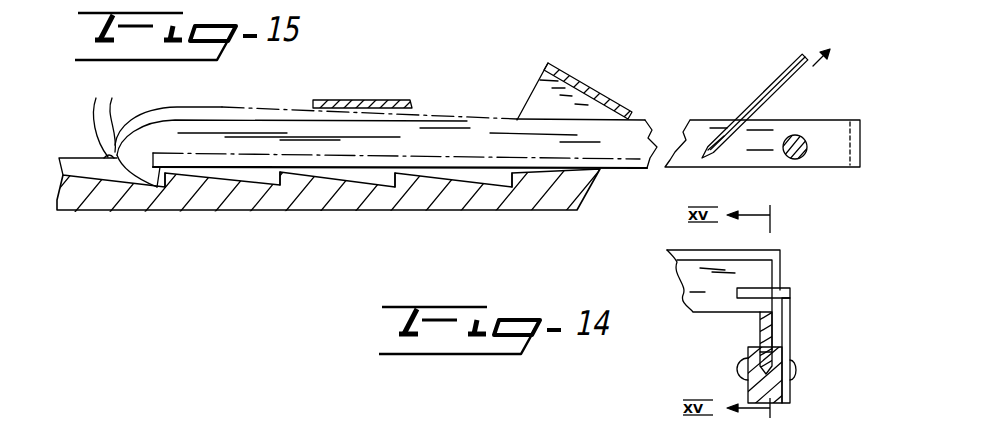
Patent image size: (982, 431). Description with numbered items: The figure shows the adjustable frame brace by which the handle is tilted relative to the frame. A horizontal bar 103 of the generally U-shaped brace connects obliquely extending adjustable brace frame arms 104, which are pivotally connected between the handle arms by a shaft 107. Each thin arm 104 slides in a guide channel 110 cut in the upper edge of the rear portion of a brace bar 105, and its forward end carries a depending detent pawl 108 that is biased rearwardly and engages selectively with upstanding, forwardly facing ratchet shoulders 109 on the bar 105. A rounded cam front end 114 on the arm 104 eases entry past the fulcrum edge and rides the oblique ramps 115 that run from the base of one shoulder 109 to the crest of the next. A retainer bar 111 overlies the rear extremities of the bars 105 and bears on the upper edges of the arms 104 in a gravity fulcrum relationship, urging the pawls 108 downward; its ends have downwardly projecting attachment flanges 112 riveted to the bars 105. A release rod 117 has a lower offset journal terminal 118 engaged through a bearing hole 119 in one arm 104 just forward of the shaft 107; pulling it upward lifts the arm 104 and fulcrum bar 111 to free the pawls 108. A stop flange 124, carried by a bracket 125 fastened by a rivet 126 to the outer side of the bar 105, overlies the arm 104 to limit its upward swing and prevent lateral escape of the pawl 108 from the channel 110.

In FIG. 15, the horizontal bar 103 is at (861, 147).
In FIG. 15, the adjustable brace frame arm 104 is at (632, 130).
In FIG. 14, the adjustable brace frame arm 104 is at (758, 326).
In FIG. 15, the brace bar 105 is at (293, 212).
In FIG. 14, the brace bar 105 is at (748, 395).
In FIG. 15, the shaft 107 is at (808, 140).
In FIG. 15, the detent pawl 108 is at (147, 176).
In FIG. 14, the detent pawl 108 is at (762, 372).
In FIG. 15, the ratchet shoulder 109 is at (167, 187).
In FIG. 15, the guide channel 110 is at (80, 165).
In FIG. 14, the guide channel 110 is at (790, 360).
In FIG. 15, the retainer bar 111 is at (590, 87).
In FIG. 14, the retainer bar 111 is at (690, 276).
In FIG. 15, the attachment flange 112 is at (540, 98).
In FIG. 14, the attachment flange 112 is at (777, 262).
In FIG. 15, the rounded cam front end 114 is at (94, 117).
In FIG. 15, the oblique ramp 115 is at (468, 175).
In FIG. 15, the release rod 117 is at (790, 77).
In FIG. 15, the offset journal terminal 118 is at (716, 140).
In FIG. 15, the bearing hole 119 is at (730, 142).
In FIG. 15, the stop flange 124 is at (350, 101).
In FIG. 14, the stop flange 124 is at (785, 296).
In FIG. 14, the bracket 125 is at (787, 332).
In FIG. 14, the rivet 126 is at (796, 373).